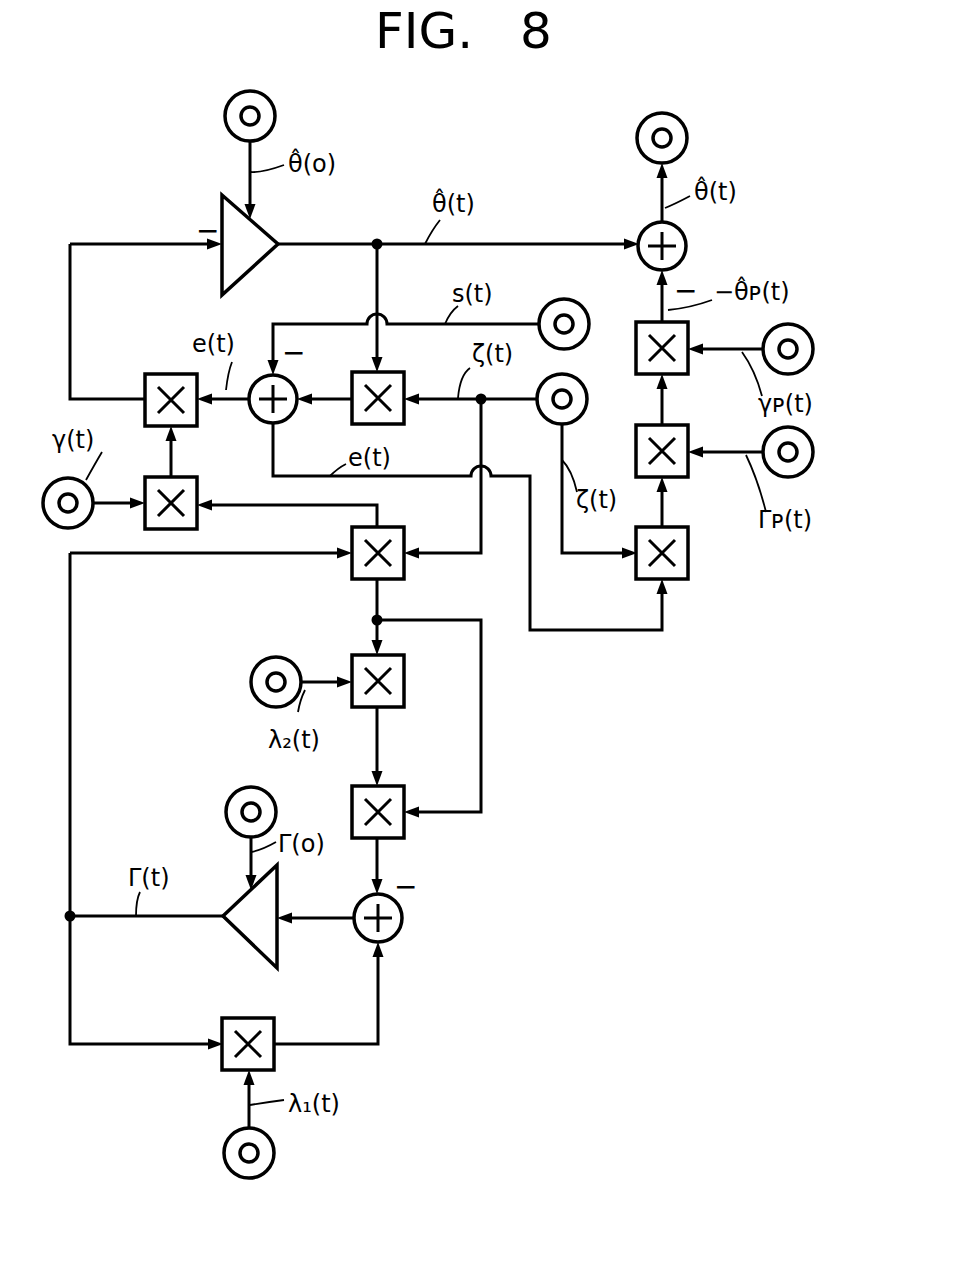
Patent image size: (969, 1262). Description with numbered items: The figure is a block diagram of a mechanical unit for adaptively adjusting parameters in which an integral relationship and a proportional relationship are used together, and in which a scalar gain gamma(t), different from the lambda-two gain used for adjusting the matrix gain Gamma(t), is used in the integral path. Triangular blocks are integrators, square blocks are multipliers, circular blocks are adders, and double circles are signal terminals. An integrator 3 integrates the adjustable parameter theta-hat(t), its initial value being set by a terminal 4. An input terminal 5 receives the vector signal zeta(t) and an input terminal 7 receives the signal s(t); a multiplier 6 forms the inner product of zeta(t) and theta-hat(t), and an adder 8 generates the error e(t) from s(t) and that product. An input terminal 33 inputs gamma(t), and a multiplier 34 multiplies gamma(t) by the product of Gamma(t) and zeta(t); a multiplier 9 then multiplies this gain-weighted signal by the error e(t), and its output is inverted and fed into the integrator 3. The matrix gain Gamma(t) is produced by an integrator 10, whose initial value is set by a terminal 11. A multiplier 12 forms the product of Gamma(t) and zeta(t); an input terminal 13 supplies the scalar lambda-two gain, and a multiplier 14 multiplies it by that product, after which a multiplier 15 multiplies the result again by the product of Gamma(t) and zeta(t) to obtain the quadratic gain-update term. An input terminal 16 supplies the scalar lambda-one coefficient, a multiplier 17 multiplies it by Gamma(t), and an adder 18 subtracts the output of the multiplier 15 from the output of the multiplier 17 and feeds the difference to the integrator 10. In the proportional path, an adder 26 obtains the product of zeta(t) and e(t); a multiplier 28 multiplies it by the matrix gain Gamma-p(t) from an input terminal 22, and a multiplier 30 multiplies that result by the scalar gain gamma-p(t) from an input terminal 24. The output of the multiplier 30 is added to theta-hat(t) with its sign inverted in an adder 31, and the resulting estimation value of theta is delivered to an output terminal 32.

The integrator 3 is at (268, 232).
The terminal 4 is at (275, 112).
The input terminal 5 is at (580, 380).
The multiplier 6 is at (404, 376).
The input terminal 7 is at (576, 300).
The adder 8 is at (290, 384).
The multiplier 9 is at (158, 372).
The integrator 10 is at (246, 946).
The terminal 11 is at (226, 794).
The multiplier 12 is at (404, 572).
The input terminal 13 is at (250, 684).
The multiplier 14 is at (404, 684).
The multiplier 15 is at (404, 832).
The input terminal 16 is at (275, 1152).
The multiplier 17 is at (278, 1020).
The adder 18 is at (402, 930).
The input terminal 22 is at (814, 456).
The input terminal 24 is at (814, 345).
The adder 26 is at (690, 578).
The multiplier 28 is at (686, 478).
The multiplier 30 is at (679, 376).
The adder 31 is at (688, 250).
The output terminal 32 is at (688, 132).
The input terminal 33 is at (56, 526).
The multiplier 34 is at (198, 486).